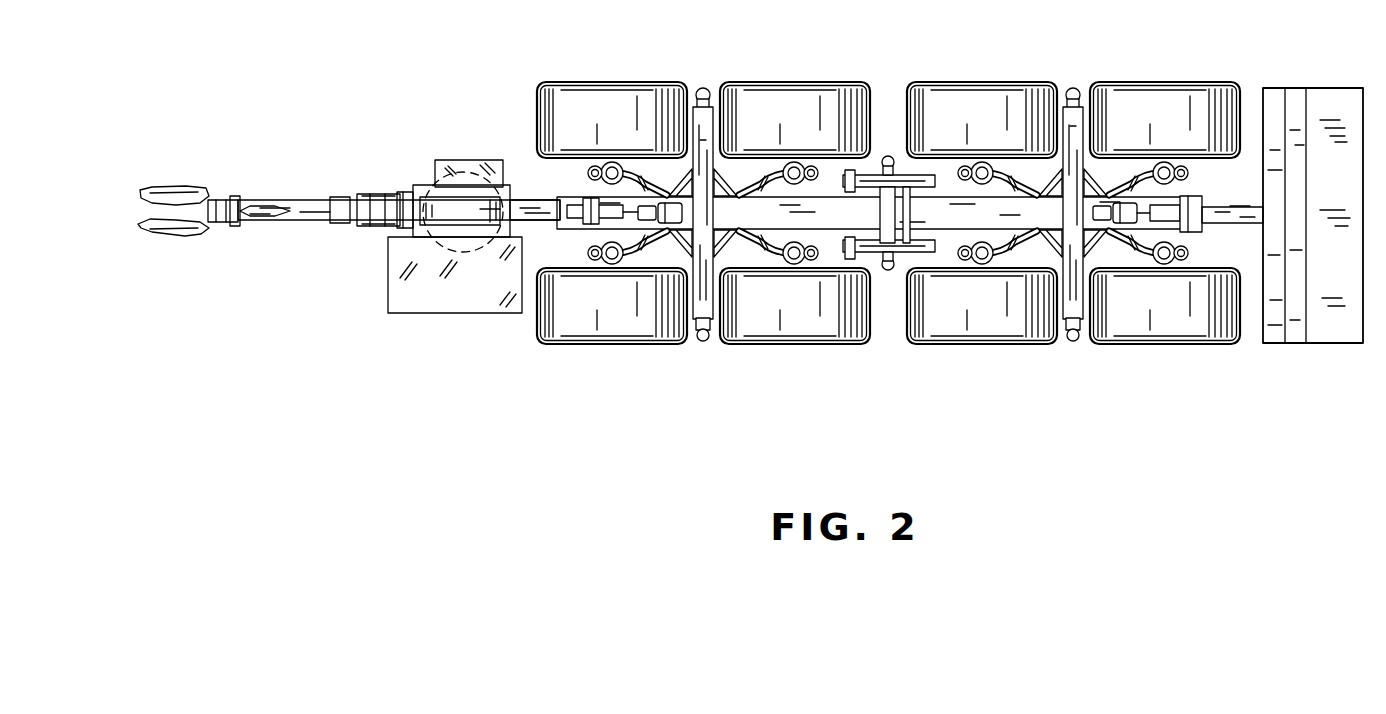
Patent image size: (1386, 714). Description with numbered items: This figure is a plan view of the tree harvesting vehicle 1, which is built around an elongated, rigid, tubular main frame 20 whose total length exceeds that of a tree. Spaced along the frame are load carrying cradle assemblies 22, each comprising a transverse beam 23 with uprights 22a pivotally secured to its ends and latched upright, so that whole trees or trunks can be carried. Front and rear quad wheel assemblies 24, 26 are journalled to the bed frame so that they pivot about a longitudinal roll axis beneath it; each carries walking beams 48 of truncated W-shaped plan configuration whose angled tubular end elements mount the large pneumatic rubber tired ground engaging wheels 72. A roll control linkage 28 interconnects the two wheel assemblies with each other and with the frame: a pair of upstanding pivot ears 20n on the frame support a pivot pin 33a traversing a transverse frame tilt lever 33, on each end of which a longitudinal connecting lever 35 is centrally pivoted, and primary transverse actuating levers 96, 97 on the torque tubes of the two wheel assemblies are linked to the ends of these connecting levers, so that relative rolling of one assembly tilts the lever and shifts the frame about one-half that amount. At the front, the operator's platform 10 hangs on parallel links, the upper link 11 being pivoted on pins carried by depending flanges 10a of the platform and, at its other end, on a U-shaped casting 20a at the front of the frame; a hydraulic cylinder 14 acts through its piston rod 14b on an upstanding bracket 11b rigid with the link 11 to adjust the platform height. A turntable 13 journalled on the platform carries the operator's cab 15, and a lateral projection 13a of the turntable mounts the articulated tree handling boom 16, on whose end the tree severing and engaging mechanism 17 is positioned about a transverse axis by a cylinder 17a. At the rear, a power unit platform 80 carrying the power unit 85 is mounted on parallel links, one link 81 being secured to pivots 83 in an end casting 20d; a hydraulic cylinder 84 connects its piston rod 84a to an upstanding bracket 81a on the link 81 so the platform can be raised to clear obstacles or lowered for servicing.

The vehicle 1 is at (543, 372).
The operator's platform 10 is at (378, 312).
The depending flanges 10a is at (468, 203).
The parallel link 11 is at (540, 226).
The upstanding bracket 11b is at (556, 204).
The turntable 13 is at (462, 168).
The lateral projection 13a is at (488, 160).
The hydraulic cylinder 14 is at (672, 222).
The piston rod 14b is at (609, 221).
The operator's cab 15 is at (458, 318).
The articulated tree handling boom 16 is at (397, 190).
The tree severing and engaging mechanism 17 is at (183, 186).
The cylinder 17a is at (256, 213).
The main frame 20 is at (760, 222).
The U-shaped casting 20a is at (584, 194).
The end casting 20d is at (1190, 226).
The upstanding pivot ears 20n is at (866, 219).
The load carrying cradle assemblies 22 is at (718, 122).
The uprights 22a is at (702, 88).
The transverse beam 23 is at (710, 145).
The front quad wheel assembly 24 is at (739, 352).
The rear quad wheel assembly 26 is at (1108, 355).
The roll control linkage 28 is at (906, 263).
The frame tilt lever 33 is at (893, 198).
The pivot pin 33a is at (910, 242).
The connecting lever 35 is at (866, 178).
The walking beam 48 is at (661, 180).
The ground engaging wheel 72 is at (585, 85).
The power unit platform 80 is at (1298, 346).
The parallel link 81 is at (1265, 213).
The upstanding bracket 81a is at (1219, 226).
The pivots 83 is at (1192, 200).
The hydraulic cylinder 84 is at (1106, 224).
The piston rod 84a is at (1146, 205).
The power unit 85 is at (1320, 88).
The primary transverse actuating lever 96 is at (843, 192).
The primary transverse actuating lever 97 is at (938, 192).